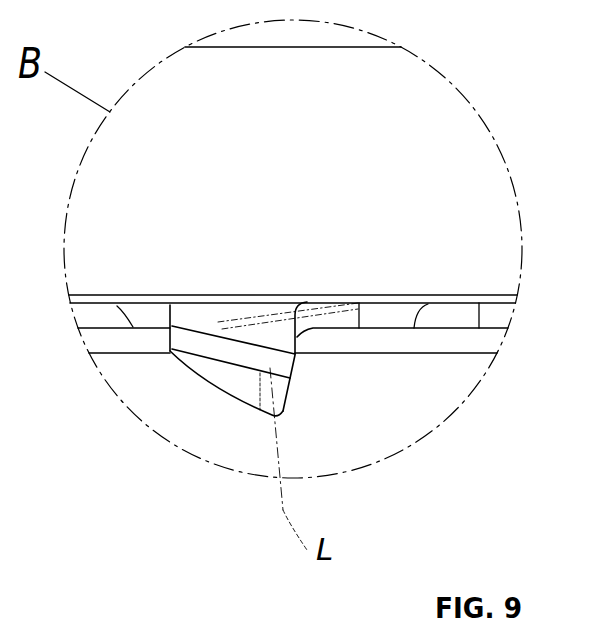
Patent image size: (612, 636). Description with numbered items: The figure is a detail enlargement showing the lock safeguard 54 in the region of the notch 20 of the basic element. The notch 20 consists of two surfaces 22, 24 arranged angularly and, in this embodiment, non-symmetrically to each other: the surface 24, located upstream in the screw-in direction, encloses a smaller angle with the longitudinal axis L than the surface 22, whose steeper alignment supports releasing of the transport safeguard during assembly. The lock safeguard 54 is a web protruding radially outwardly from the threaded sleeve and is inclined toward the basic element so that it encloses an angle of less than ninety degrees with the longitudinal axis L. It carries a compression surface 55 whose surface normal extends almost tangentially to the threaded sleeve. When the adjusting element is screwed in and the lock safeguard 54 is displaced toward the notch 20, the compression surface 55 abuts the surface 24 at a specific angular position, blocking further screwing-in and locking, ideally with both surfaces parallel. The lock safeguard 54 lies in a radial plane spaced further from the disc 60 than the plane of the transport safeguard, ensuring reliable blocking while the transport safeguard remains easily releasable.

The notch 20 is at (296, 418).
The surface 22 is at (207, 387).
The surface 24 is at (298, 360).
The lock safeguard 54 is at (277, 337).
The compression surface 55 is at (313, 333).
The disc 60 is at (443, 165).